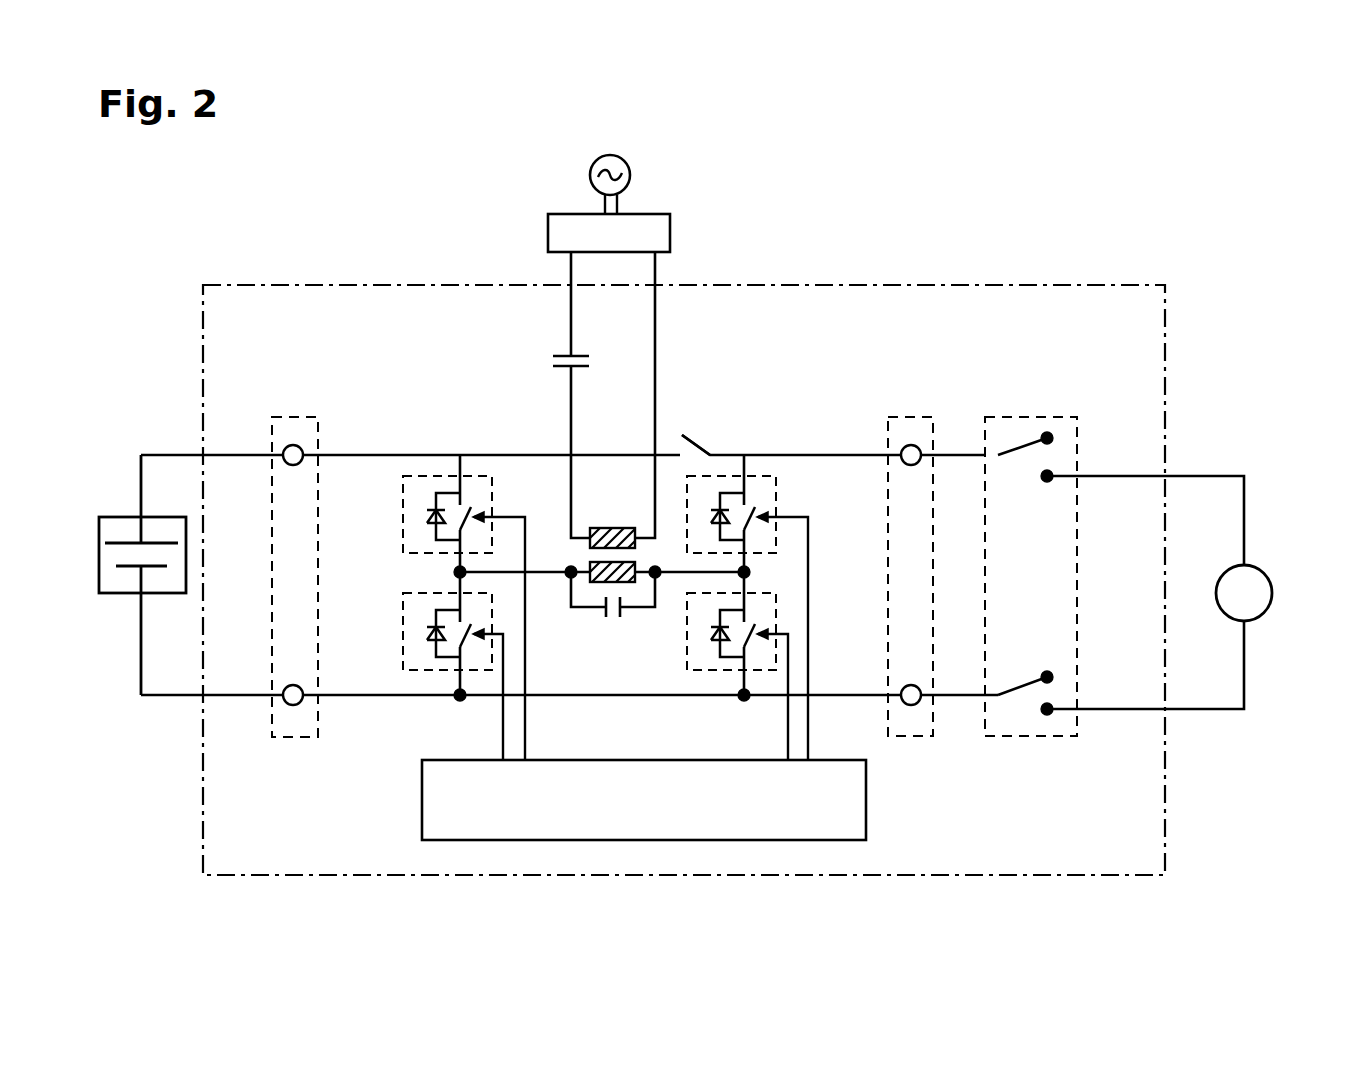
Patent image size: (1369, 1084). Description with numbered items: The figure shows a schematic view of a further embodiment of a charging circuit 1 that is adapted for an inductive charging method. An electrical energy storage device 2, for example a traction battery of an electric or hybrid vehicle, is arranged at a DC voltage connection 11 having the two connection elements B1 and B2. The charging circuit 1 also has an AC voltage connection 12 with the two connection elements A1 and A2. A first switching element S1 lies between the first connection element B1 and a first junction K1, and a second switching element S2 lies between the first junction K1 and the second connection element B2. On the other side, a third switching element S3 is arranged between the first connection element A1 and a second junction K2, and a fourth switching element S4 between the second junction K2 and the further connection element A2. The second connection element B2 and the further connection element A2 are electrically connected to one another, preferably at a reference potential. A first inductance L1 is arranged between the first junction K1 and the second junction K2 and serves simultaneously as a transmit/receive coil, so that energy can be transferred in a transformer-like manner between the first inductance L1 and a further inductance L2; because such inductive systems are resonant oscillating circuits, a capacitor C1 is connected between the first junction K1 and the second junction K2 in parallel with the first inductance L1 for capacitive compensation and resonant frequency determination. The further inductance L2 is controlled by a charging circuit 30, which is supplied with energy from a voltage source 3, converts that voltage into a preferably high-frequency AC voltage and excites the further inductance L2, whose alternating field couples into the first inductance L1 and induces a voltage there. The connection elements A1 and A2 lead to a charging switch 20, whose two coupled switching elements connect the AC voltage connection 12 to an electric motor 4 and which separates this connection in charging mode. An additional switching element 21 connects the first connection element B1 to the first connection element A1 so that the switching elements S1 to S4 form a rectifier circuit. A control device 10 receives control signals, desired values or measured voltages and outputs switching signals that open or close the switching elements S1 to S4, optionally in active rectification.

The charging circuit 1 is at (203, 360).
The electrical energy storage device 2 is at (110, 594).
The electrical energy source 3 is at (630, 184).
The electric motor 4 is at (1271, 602).
The control device 10 is at (422, 830).
The DC voltage connection 11 is at (293, 417).
The AC voltage connection 12 is at (911, 417).
The charging switch 20 is at (1008, 417).
The additional switching element 21 is at (683, 437).
The charging circuit 30 is at (671, 240).
The first connection element B1 is at (302, 447).
The second connection element B2 is at (297, 706).
The first connection element A1 is at (904, 447).
The further connection element A2 is at (914, 706).
The first switching element S1 is at (492, 478).
The second switching element S2 is at (492, 620).
The third switching element S3 is at (776, 485).
The fourth switching element S4 is at (776, 626).
The first junction K1 is at (460, 572).
The second junction K2 is at (744, 572).
The capacitor C1 is at (606, 618).
The first inductance L1 is at (628, 586).
The further inductance L2 is at (612, 527).